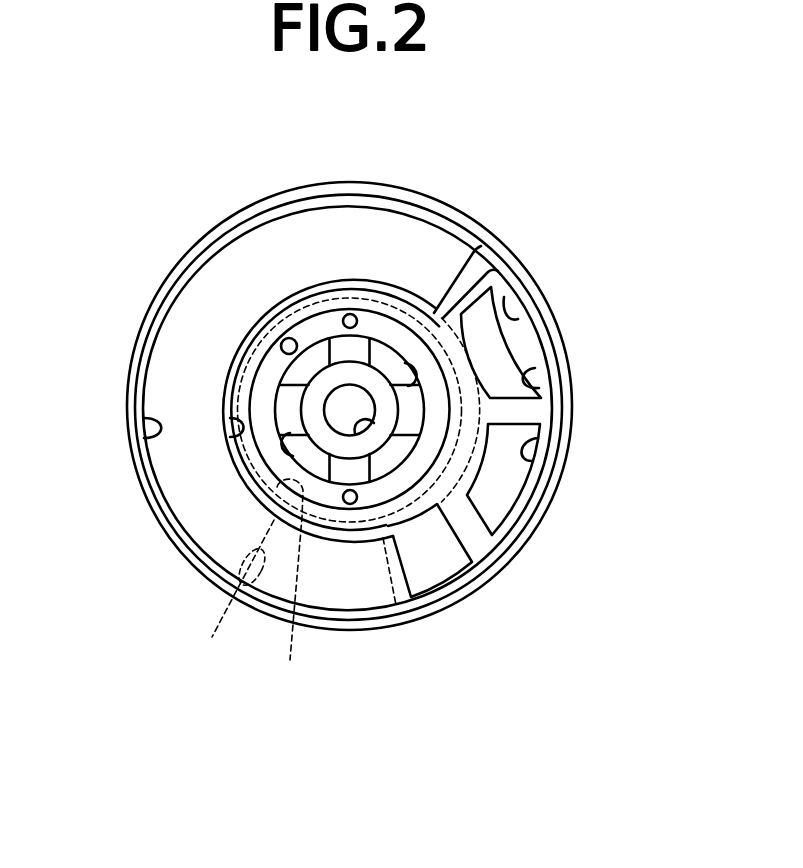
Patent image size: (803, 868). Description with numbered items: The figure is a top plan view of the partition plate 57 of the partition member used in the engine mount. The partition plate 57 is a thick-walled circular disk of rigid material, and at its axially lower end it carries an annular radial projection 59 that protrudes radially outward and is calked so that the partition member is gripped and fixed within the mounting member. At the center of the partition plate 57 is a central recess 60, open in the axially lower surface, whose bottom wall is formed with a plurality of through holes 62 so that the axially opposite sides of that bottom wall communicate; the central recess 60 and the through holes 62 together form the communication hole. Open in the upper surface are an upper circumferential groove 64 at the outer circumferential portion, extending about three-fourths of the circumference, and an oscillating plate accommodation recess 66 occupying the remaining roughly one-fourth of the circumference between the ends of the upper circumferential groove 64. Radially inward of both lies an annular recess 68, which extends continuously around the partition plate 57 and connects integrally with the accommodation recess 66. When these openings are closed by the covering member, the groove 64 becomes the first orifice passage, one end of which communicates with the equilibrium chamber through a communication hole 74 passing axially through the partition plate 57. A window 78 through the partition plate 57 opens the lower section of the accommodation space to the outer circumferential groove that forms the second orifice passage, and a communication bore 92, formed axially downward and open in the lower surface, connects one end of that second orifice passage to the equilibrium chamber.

The partition plate 57 is at (461, 148).
The annular radial projection 59 is at (238, 223).
The central recess 60 is at (290, 583).
The through holes 62 is at (409, 366).
The upper circumferential groove 64 is at (150, 430).
The oscillating plate accommodation recess 66 is at (520, 317).
The annular recess 68 is at (242, 432).
The communication hole 74 is at (455, 545).
The window 78 is at (540, 386).
The communication bore 92 is at (234, 594).